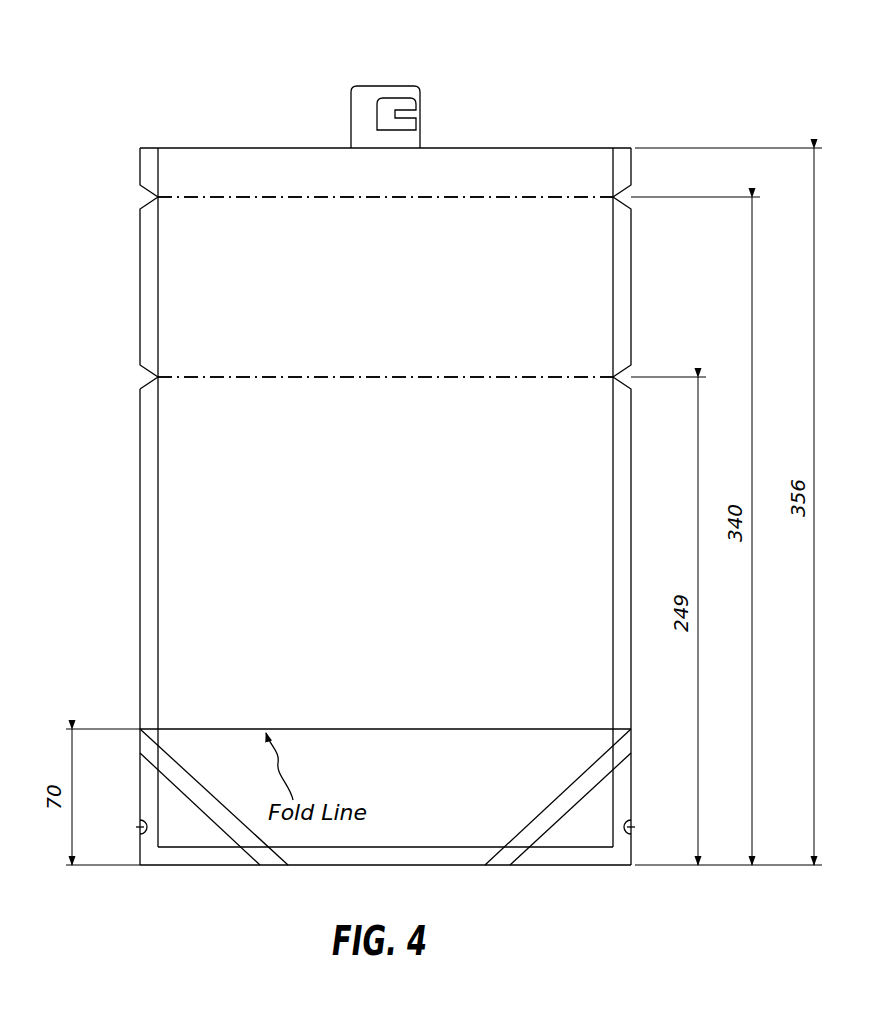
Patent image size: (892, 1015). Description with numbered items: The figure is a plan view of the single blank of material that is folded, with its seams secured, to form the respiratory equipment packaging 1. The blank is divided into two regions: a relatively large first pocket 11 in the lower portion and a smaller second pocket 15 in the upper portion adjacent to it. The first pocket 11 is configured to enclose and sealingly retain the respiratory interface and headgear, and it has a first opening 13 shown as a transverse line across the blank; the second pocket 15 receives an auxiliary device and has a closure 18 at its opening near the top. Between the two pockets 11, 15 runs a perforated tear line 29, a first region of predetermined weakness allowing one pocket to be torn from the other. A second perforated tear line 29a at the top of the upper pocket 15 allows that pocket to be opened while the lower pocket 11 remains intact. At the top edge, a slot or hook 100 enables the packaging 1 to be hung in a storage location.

The respiratory equipment packaging 1 is at (98, 142).
The slot or hook 100 is at (427, 82).
The second pocket 15 is at (188, 327).
The first pocket 11 is at (190, 600).
The closure 18 is at (470, 197).
The perforated tear line 29a is at (266, 200).
The first opening 13 is at (470, 377).
The perforated tear line 29 is at (266, 380).